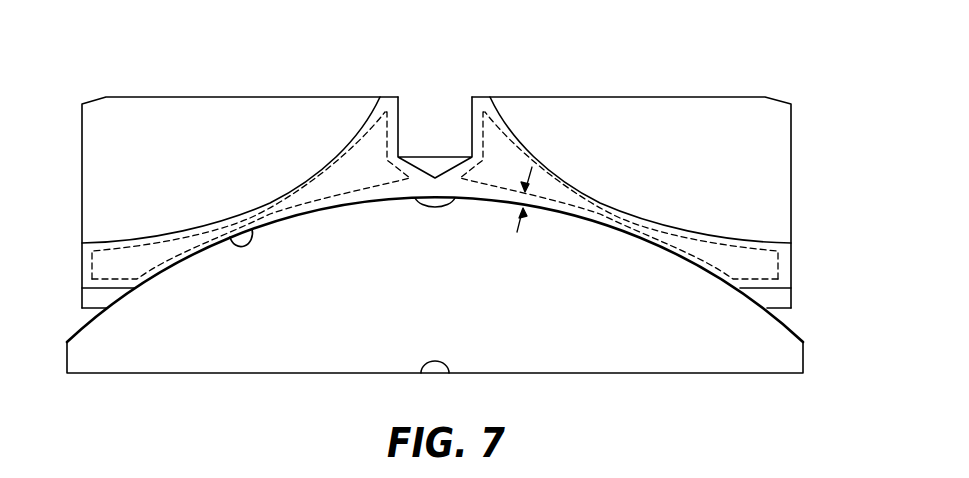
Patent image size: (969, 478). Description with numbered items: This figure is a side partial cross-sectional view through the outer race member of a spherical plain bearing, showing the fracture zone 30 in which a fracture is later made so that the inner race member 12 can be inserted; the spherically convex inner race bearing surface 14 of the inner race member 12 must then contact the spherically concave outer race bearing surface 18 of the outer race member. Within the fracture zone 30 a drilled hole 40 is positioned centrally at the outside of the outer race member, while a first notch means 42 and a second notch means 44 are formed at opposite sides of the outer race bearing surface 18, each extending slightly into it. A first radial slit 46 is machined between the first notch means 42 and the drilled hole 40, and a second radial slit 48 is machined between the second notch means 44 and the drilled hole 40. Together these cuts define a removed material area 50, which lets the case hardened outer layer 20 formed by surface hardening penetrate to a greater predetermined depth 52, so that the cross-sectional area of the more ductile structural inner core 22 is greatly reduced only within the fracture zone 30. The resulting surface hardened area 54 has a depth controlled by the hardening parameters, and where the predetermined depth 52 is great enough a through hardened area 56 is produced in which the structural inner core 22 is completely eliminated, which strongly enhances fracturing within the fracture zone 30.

The inner race member 12 is at (645, 330).
The inner race bearing surface 14 is at (710, 272).
The outer race bearing surface 18 is at (250, 230).
The case hardened outer layer 20 is at (487, 97).
The structural inner core 22 is at (352, 158).
The fracture zone 30 is at (791, 104).
The drilled hole 40 is at (436, 142).
The first notch means 42 is at (90, 299).
The second notch means 44 is at (782, 298).
The first radial slit 46 is at (177, 163).
The second radial slit 48 is at (709, 165).
The removed material area 50 is at (643, 97).
The predetermined depth 52 is at (527, 200).
The surface hardened area 54 is at (117, 243).
The through hardened area 56 is at (608, 218).